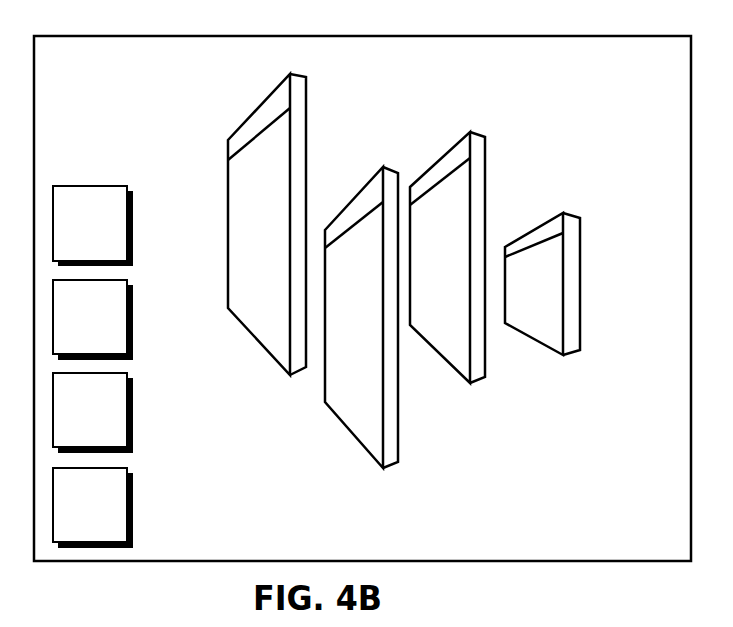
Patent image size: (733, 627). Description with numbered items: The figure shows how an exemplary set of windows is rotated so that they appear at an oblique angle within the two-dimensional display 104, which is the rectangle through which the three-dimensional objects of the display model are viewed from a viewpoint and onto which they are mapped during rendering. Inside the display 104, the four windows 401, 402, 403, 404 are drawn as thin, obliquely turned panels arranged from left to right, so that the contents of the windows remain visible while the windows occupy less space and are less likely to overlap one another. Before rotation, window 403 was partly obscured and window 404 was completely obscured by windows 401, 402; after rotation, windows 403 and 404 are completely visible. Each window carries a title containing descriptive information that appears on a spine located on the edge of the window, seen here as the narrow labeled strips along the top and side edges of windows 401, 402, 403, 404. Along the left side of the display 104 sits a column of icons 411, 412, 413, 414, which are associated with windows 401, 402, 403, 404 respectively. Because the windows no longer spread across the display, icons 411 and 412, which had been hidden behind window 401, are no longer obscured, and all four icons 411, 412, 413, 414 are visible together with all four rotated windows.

The 2D display 104 is at (35, 35).
The window 401 is at (305, 78).
The window 402 is at (398, 380).
The window 403 is at (485, 135).
The window 404 is at (578, 218).
The icon 411 is at (93, 226).
The icon 412 is at (93, 320).
The icon 413 is at (93, 413).
The icon 414 is at (93, 508).